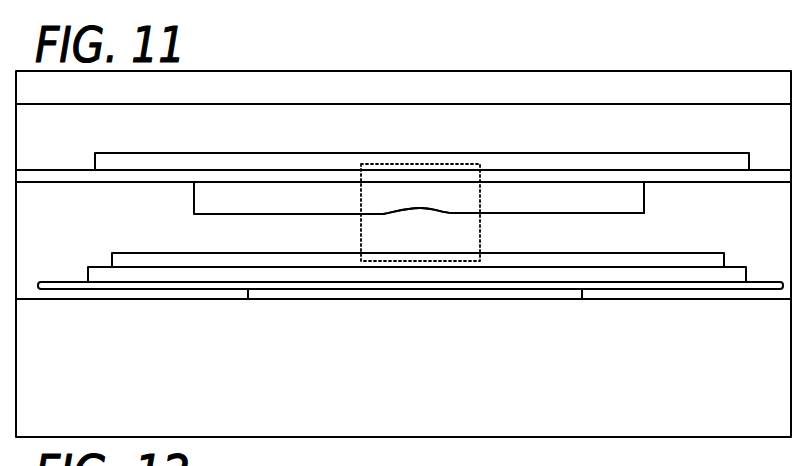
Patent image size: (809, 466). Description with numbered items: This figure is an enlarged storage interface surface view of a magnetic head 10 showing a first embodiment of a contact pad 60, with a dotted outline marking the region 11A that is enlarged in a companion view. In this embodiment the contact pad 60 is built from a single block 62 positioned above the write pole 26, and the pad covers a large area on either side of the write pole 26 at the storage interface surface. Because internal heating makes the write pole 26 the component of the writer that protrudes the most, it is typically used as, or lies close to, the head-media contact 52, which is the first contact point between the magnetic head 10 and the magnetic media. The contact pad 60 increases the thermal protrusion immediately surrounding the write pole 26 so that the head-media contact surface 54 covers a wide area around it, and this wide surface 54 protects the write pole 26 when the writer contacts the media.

The magnetic head 10 is at (662, 58).
The contact pad 60 is at (543, 200).
The single block 62 is at (300, 197).
The head-media contact 52 is at (418, 210).
The write pole 26 is at (420, 210).
The head-media contact surface 54 is at (552, 214).
The detail region 11A is at (360, 262).